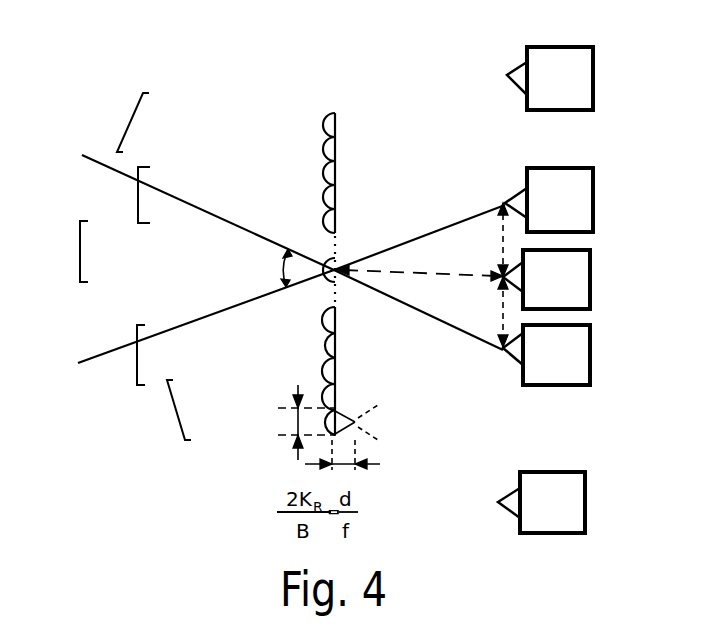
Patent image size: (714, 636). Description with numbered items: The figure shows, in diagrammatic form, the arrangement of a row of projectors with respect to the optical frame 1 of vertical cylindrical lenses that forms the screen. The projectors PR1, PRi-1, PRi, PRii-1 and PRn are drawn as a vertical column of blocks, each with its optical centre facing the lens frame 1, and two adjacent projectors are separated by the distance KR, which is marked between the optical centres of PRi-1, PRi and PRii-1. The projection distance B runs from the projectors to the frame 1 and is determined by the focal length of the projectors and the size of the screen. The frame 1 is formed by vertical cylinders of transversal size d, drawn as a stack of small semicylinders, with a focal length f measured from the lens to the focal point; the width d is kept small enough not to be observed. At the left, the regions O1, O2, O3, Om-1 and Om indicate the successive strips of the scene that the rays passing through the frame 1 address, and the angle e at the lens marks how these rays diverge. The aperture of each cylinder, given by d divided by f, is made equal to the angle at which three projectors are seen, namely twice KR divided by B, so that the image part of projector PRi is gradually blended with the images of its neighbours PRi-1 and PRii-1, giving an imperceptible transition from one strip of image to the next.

The optical frame of vertical cylindrical lenses 1 is at (322, 328).
The projector PR1 is at (579, 78).
The adjacent projector PRi-1 is at (580, 200).
The projector PRi is at (572, 279).
The adjacent projector PRii-1 is at (582, 355).
The projector PRn is at (570, 502).
The object region 1 O1 is at (118, 122).
The object region 2 O2 is at (126, 195).
The object region 3 O3 is at (63, 251).
The object region m-1 Om-1 is at (112, 361).
The object region m Om is at (161, 413).
The distance between two adjacent projectors KR is at (501, 275).
The projection distance B is at (420, 278).
The transversal size of the cylinders d is at (301, 422).
The focal length of the vertical cylinders f is at (342, 440).
The viewing angle e is at (274, 268).